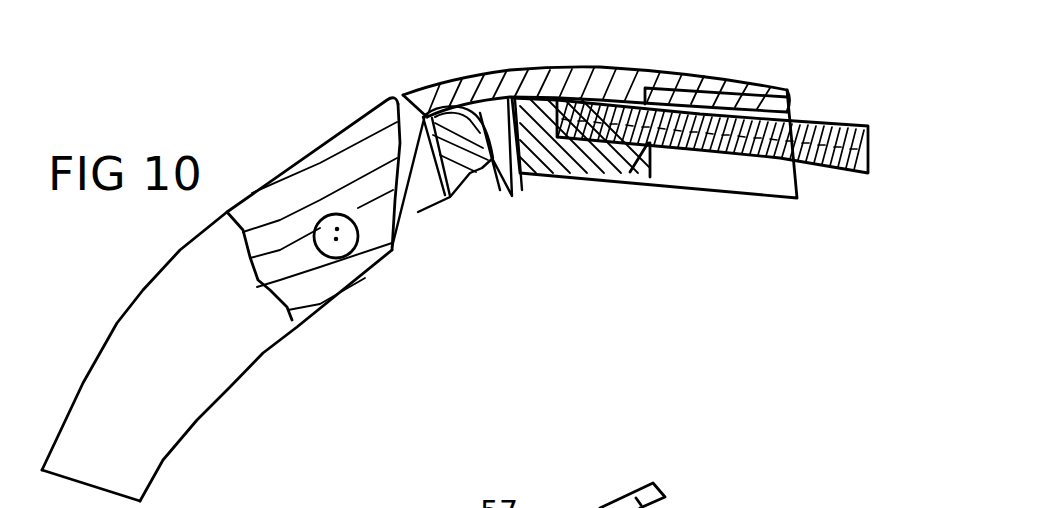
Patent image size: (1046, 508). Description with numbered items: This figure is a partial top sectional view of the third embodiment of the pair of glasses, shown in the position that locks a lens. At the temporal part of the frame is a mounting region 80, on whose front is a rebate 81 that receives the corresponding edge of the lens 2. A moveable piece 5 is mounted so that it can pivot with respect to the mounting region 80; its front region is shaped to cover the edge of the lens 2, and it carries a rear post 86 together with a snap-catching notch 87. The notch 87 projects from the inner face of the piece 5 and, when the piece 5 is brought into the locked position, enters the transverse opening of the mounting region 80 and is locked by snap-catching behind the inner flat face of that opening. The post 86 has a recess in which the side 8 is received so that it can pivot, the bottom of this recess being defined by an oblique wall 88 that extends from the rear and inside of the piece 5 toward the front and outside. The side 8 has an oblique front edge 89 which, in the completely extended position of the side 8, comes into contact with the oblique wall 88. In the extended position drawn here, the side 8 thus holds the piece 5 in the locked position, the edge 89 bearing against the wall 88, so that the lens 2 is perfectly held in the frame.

The lens 2 is at (857, 176).
The moveable piece 5 is at (632, 68).
The side 8 is at (112, 320).
The mounting region 80 is at (603, 177).
The rebate 81 is at (686, 140).
The rear post 86 is at (422, 213).
The snap-catching notch 87 is at (515, 200).
The oblique wall 88 is at (388, 202).
The oblique front edge 89 is at (402, 186).